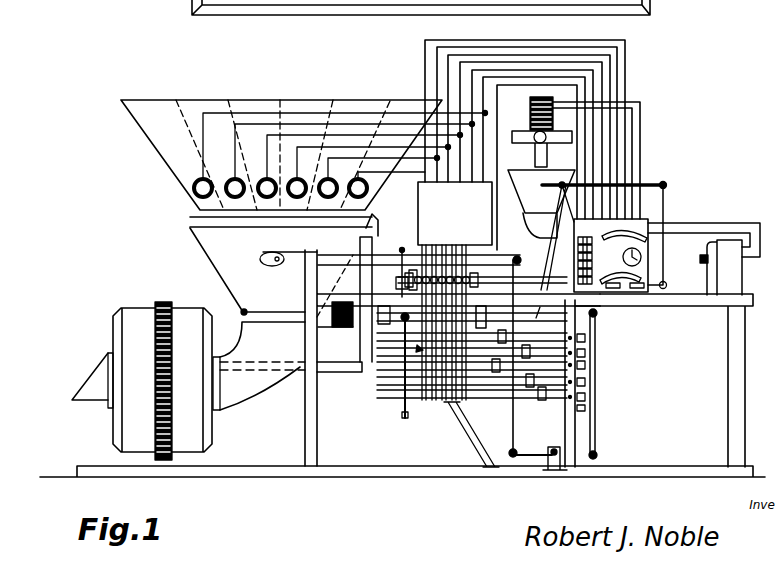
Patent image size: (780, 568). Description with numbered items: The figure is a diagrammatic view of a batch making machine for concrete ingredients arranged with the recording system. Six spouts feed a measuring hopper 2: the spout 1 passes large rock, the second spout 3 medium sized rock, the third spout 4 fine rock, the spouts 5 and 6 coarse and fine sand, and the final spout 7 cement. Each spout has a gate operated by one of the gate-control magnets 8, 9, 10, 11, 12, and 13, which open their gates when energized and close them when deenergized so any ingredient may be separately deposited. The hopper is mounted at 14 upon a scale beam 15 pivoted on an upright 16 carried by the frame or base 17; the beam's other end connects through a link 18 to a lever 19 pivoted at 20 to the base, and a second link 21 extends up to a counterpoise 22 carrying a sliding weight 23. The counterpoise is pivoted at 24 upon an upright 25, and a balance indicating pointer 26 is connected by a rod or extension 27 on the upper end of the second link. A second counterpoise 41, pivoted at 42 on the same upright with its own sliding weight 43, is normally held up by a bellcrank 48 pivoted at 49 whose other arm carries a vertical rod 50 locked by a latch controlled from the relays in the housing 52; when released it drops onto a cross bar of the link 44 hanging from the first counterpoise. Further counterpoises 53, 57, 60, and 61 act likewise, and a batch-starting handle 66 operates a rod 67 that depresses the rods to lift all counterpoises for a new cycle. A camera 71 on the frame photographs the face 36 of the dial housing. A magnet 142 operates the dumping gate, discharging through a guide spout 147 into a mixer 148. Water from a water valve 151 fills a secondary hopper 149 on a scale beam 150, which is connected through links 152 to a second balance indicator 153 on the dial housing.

The spout 1 is at (143, 129).
The measuring hopper 2 is at (205, 247).
The second spout 3 is at (197, 101).
The third spout 4 is at (258, 101).
The spout 5 is at (316, 101).
The spout 6 is at (362, 104).
The final spout 7 is at (408, 101).
The gate-control magnet 8 is at (197, 179).
The gate-control magnet 9 is at (232, 179).
The gate-control magnet 10 is at (263, 179).
The gate-control magnet 11 is at (294, 179).
The gate-control magnet 12 is at (322, 179).
The gate-control magnet 13 is at (353, 179).
The hopper mounting 14 is at (265, 257).
The scale beam 15 is at (293, 252).
The upright 16 is at (316, 253).
The frame or base 17 is at (357, 472).
The link 18 is at (510, 433).
The lever 19 is at (527, 446).
The pivot 20 is at (554, 447).
The second link 21 is at (597, 437).
The counterpoise 22 is at (598, 313).
The sliding weight 23 is at (481, 308).
The pivot 24 is at (541, 310).
The upright 25 is at (568, 416).
The balance indicating pointer 26 is at (628, 226).
The rod or extension 27 is at (634, 308).
The face of the dial housing 36 is at (640, 240).
The second counterpoise 41 is at (588, 338).
The pivot 42 is at (588, 351).
The sliding weight 43 is at (496, 331).
The link 44 is at (402, 418).
The bellcrank 48 is at (385, 356).
The pivot 49 is at (416, 352).
The vertical rod 50 is at (405, 312).
The housing 52 is at (420, 198).
The counterpoise 53 is at (588, 364).
The counterpoise 57 is at (588, 380).
The counterpoise 60 is at (588, 395).
The counterpoise 61 is at (588, 401).
The batch-starting handle 66 is at (401, 253).
The batch-starting rod 67 is at (482, 275).
The camera 71 is at (735, 271).
The magnet 142 is at (338, 323).
The guide spout 147 is at (275, 388).
The mixer 148 is at (137, 315).
The secondary hopper 149 is at (522, 186).
The scale beam 150 is at (648, 183).
The water valve 151 is at (548, 158).
The links 152 is at (667, 246).
The second balance indicator 153 is at (640, 274).